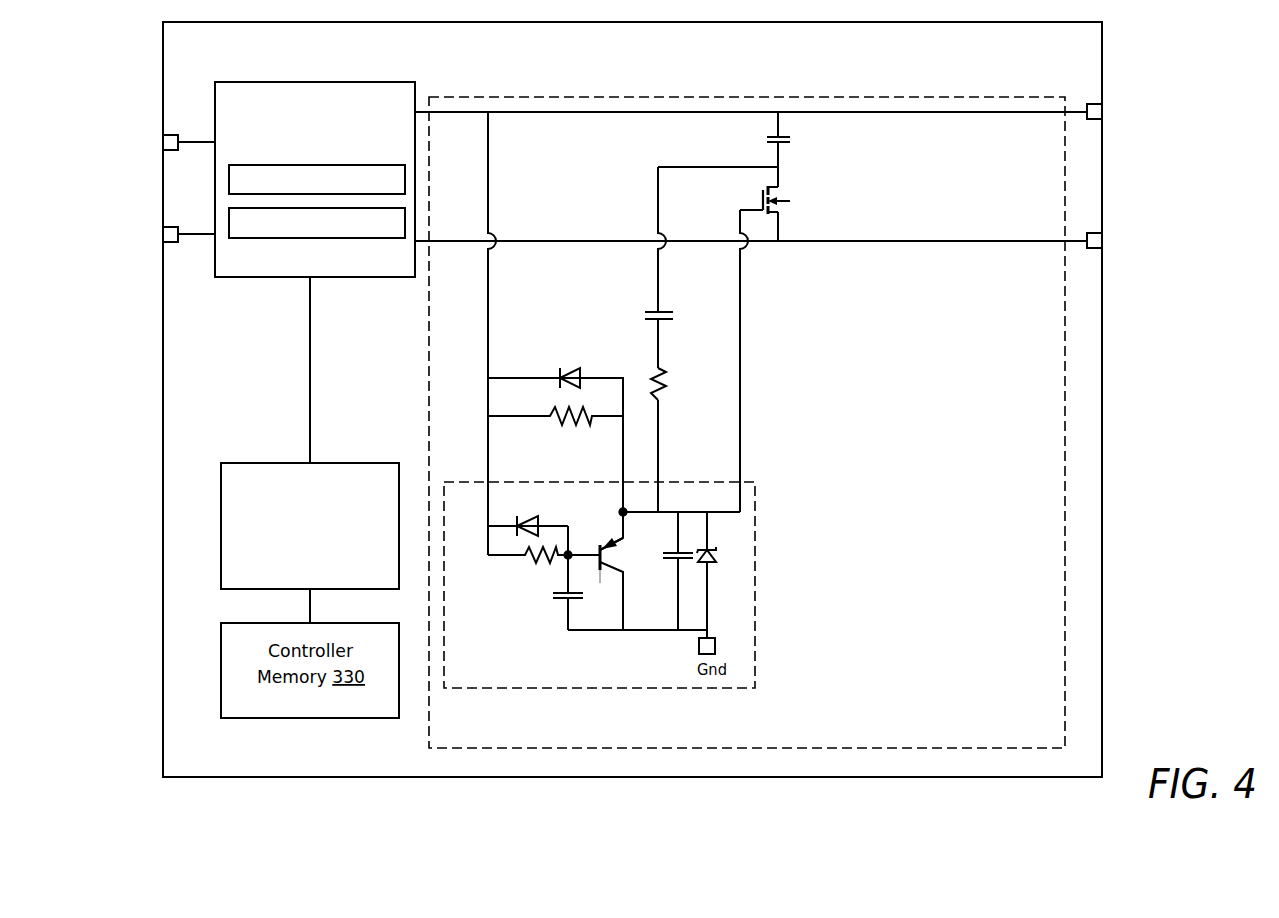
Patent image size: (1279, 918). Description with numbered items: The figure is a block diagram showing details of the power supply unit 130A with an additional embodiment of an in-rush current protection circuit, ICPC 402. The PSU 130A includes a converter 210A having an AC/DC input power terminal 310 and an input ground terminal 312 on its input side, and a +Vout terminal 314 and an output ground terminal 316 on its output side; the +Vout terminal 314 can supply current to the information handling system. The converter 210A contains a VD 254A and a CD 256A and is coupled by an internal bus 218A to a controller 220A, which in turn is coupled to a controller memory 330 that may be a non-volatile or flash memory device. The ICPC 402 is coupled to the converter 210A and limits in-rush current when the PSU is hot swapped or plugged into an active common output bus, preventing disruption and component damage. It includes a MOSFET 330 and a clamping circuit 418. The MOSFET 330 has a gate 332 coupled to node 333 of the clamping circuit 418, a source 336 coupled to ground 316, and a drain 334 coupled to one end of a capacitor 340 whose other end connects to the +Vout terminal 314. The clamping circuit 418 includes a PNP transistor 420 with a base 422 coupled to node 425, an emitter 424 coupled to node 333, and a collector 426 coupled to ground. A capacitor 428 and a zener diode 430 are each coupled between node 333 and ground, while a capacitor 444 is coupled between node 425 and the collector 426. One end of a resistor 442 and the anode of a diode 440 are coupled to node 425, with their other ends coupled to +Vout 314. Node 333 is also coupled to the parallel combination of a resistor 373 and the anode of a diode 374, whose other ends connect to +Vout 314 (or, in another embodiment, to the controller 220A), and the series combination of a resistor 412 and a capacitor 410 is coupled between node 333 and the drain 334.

The power supply unit 130A is at (632, 399).
The converter 210A is at (315, 179).
The VD 254A is at (317, 179).
The CD 256A is at (317, 223).
The AC/DC input power terminal 310 is at (142, 144).
The input ground terminal 312 is at (141, 235).
The +Vout terminal 314 is at (803, 113).
The output ground terminal 316 is at (796, 242).
The internal bus 218A is at (251, 370).
The controller 220A is at (310, 526).
The MOSFET 330 is at (831, 207).
The in-rush current protection circuit 402 is at (747, 404).
The capacitor 340 is at (825, 149).
The drain 334 is at (820, 169).
The source 336 is at (828, 222).
The gate 332 is at (721, 197).
The diode 374 is at (564, 415).
The resistor 373 is at (555, 442).
The capacitor 410 is at (670, 313).
The resistor 412 is at (667, 383).
The clamping circuit 418 is at (763, 599).
The node 333 is at (622, 510).
The diode 440 is at (527, 517).
The resistor 442 is at (528, 557).
The node 425 is at (565, 560).
The capacitor 444 is at (553, 602).
The PNP transistor 420 is at (607, 560).
The emitter 424 is at (620, 523).
The base 422 is at (580, 597).
The collector 426 is at (625, 598).
The capacitor 428 is at (667, 545).
The zener diode 430 is at (711, 564).